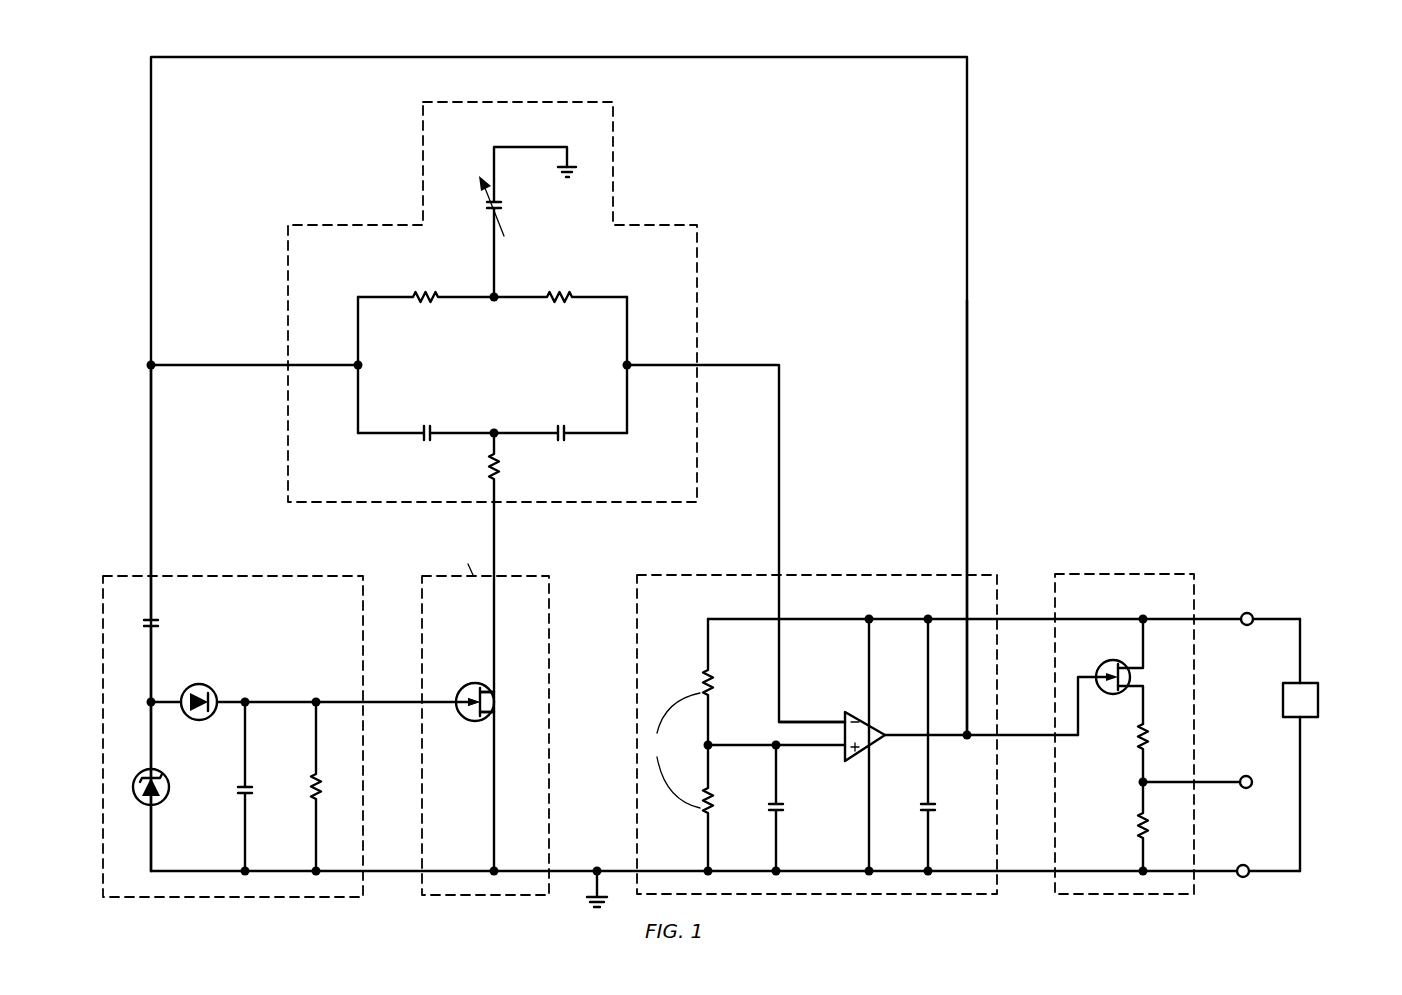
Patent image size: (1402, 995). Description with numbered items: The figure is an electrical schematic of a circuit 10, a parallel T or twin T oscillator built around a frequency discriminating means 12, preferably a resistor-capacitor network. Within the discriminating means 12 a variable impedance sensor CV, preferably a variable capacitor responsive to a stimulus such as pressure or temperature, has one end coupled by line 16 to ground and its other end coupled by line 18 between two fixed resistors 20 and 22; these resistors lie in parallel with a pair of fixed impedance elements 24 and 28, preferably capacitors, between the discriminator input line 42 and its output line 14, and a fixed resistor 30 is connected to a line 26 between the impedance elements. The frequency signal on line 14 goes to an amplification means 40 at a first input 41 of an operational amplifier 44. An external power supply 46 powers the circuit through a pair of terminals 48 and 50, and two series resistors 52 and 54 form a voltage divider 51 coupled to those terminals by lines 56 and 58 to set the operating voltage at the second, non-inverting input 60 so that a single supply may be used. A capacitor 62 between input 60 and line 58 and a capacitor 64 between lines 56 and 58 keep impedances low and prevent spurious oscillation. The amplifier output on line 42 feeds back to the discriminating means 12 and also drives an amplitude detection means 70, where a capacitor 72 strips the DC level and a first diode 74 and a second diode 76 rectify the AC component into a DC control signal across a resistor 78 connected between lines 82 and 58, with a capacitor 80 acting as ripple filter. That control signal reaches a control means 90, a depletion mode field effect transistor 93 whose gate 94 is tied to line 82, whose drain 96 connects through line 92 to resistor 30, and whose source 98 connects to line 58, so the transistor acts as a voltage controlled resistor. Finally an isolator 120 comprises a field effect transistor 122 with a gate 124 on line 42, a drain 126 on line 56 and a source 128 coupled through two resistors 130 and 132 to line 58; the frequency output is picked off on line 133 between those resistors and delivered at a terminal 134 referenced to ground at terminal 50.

The circuit 10 is at (707, 44).
The frequency discriminating means 12 is at (697, 242).
The line 14 is at (779, 392).
The line 16 is at (513, 145).
The variable impedance sensor CV is at (503, 206).
The line 18 is at (494, 266).
The fixed resistor 20 is at (425, 290).
The fixed resistor 22 is at (563, 290).
The fixed impedance element 24 is at (426, 427).
The line 26 is at (516, 432).
The fixed impedance element 28 is at (562, 430).
The fixed resistor 30 is at (500, 473).
The amplification means 40 is at (818, 573).
The first input 41 is at (806, 720).
The line 42 is at (968, 270).
The operational amplifier 44 is at (866, 722).
The external power supply 46 is at (1310, 683).
The terminal 48 is at (1248, 612).
The terminal 50 is at (1245, 878).
The voltage divider 51 is at (671, 750).
The series resistor 52 is at (706, 672).
The series resistor 54 is at (706, 810).
The line 56 is at (1013, 618).
The line 58 is at (384, 870).
The second (non-inverting) input 60 is at (811, 747).
The capacitor 62 is at (790, 810).
The capacitor 64 is at (931, 800).
The amplitude detection means 70 is at (128, 575).
The capacitor 72 is at (160, 623).
The first diode 74 is at (205, 685).
The second diode 76 is at (165, 780).
The resistor 78 is at (317, 773).
The capacitor 80 is at (238, 797).
The line 82 is at (381, 700).
The control means 90 is at (549, 613).
The line 92 is at (497, 547).
The field effect transistor 93 is at (468, 719).
The gate 94 is at (461, 697).
The drain 96 is at (497, 690).
The source 98 is at (497, 712).
The isolator 120 is at (1073, 574).
The field effect transistor 122 is at (1112, 699).
The gate 124 is at (1095, 675).
The drain 126 is at (1146, 668).
The source 128 is at (1146, 687).
The resistor 130 is at (1135, 745).
The resistor 132 is at (1138, 818).
The line 133 is at (1205, 783).
The terminal 134 is at (1243, 775).